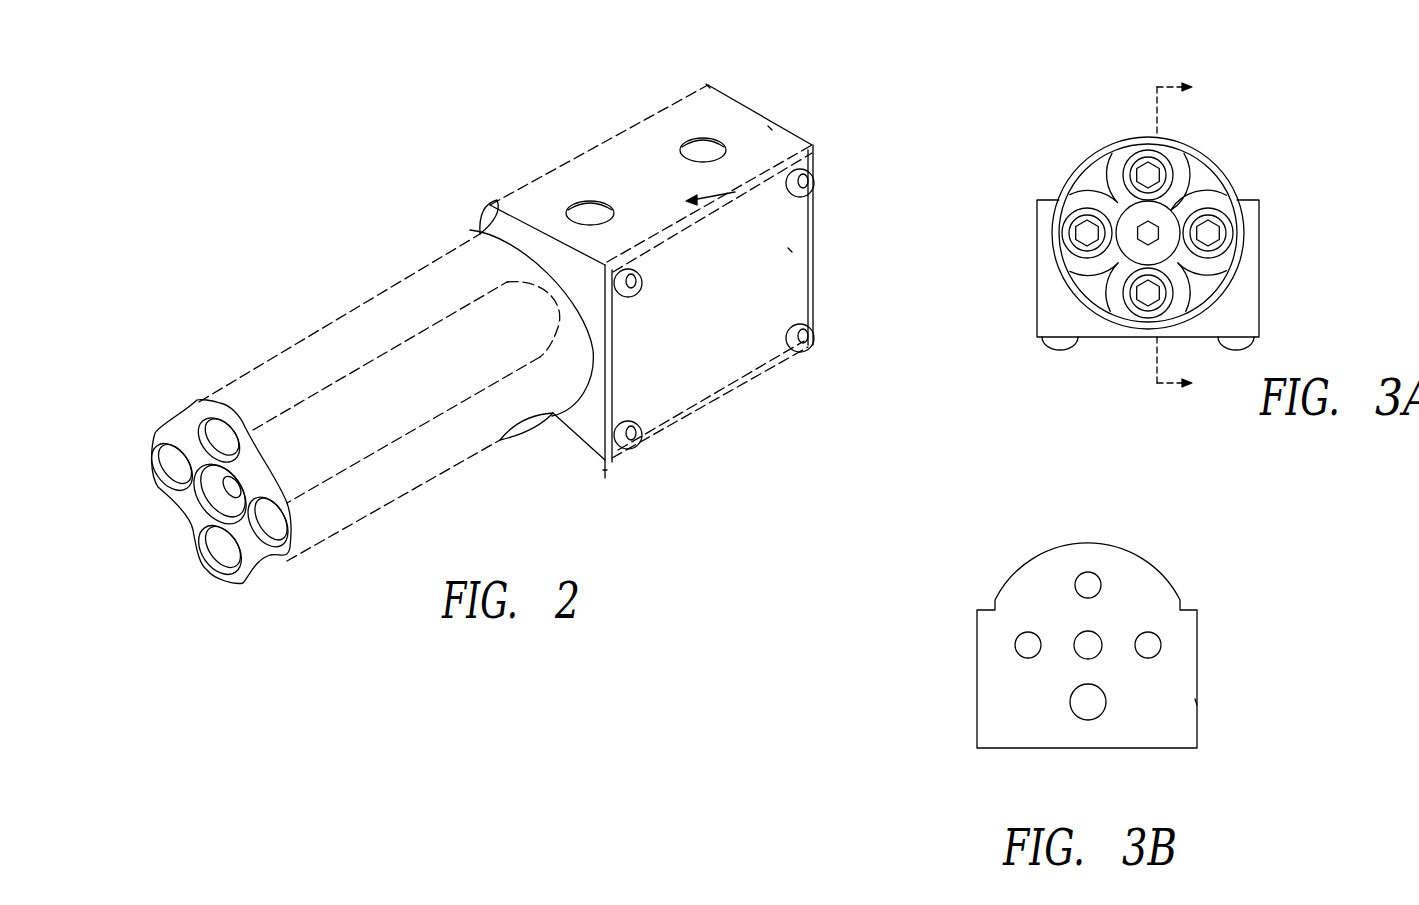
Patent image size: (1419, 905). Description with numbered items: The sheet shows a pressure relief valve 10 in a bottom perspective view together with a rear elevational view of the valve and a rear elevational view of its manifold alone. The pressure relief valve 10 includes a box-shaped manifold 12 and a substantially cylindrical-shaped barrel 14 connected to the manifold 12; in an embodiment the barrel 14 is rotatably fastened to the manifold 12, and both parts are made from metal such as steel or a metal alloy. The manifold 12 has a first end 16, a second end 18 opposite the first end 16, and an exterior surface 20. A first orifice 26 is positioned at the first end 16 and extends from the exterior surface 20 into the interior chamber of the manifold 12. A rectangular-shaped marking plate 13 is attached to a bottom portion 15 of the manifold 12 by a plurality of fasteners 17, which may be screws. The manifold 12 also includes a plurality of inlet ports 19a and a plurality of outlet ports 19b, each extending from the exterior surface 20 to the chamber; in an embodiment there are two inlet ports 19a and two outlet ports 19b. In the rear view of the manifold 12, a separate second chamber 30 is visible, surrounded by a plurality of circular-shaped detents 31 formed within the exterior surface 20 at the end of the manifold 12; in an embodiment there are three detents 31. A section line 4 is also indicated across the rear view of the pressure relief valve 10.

In FIG. 3A, the section line 4- 4 is at (1187, 235).
In FIG. 2, the pressure relief valve 10 is at (430, 165).
In FIG. 3A, the pressure relief valve 10 is at (1310, 127).
In FIG. 2, the manifold 12 is at (815, 170).
In FIG. 3A, the manifold 12 is at (1235, 306).
In FIG. 3B, the manifold 12 is at (1125, 550).
In FIG. 2, the marking plate 13 is at (790, 250).
In FIG. 2, the barrel 14 is at (305, 338).
In FIG. 3A, the barrel 14 is at (1118, 265).
In FIG. 2, the bottom portion 15 is at (605, 478).
In FIG. 2, the first end 16 is at (708, 86).
In FIG. 2, the fasteners 17 is at (800, 197).
In FIG. 2, the second end 18 is at (490, 205).
In FIG. 3B, the second end 18 is at (1190, 702).
In FIG. 2, the inlet ports 19a is at (705, 150).
In FIG. 2, the outlet ports 19b is at (590, 212).
In FIG. 2, the exterior surface 20 is at (770, 128).
In FIG. 3B, the first orifice 26 is at (1090, 700).
In FIG. 3B, the second chamber 30 is at (1082, 638).
In FIG. 3B, the detents 31 is at (1087, 575).